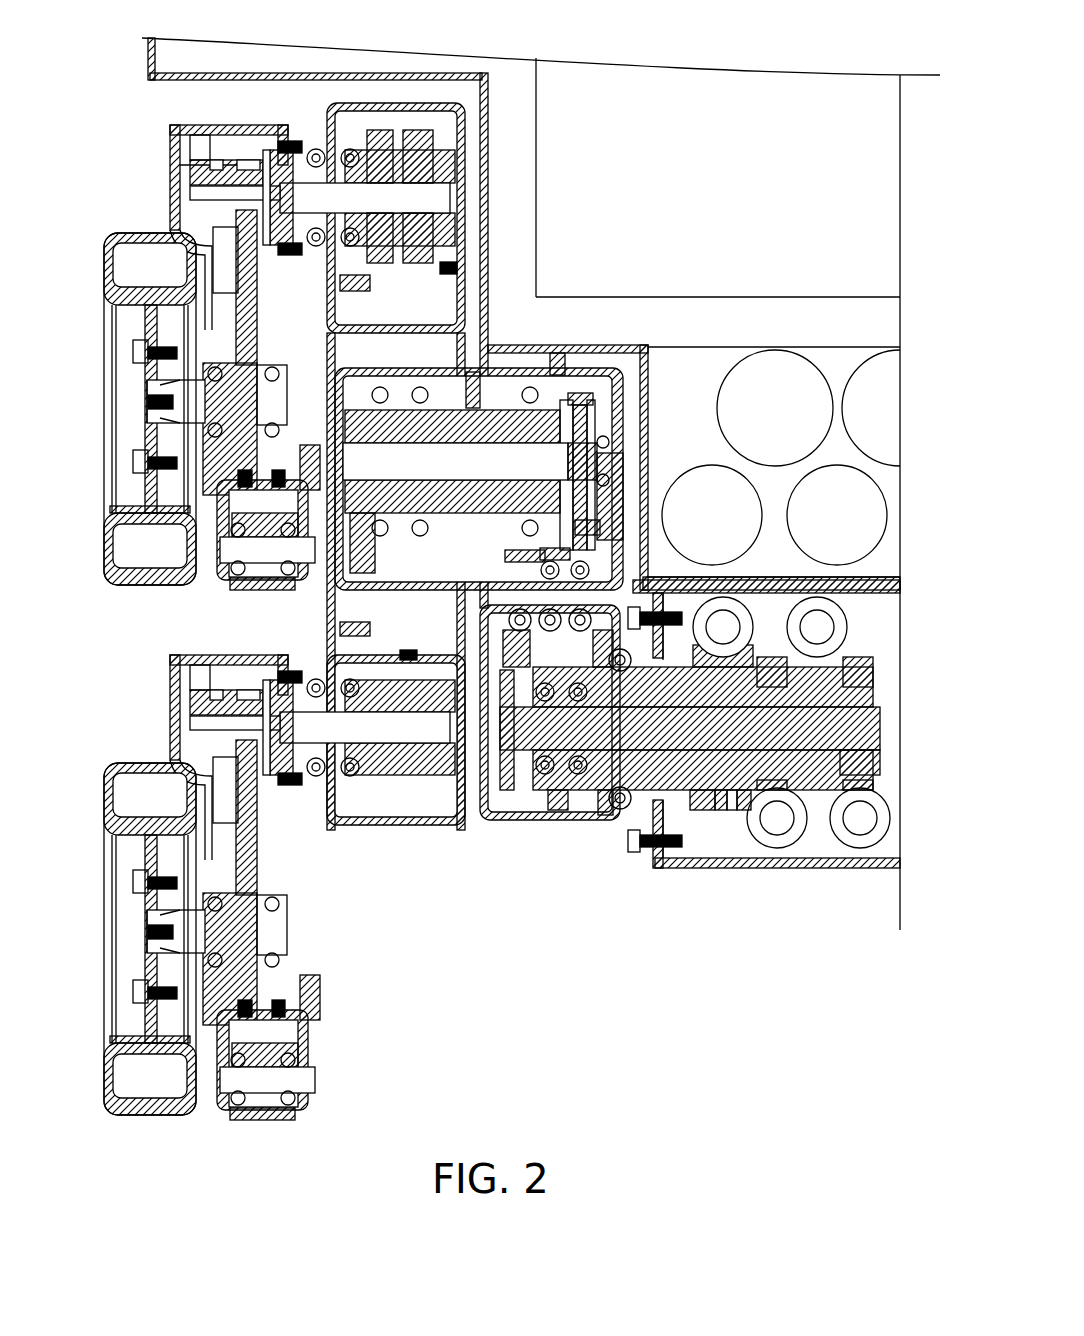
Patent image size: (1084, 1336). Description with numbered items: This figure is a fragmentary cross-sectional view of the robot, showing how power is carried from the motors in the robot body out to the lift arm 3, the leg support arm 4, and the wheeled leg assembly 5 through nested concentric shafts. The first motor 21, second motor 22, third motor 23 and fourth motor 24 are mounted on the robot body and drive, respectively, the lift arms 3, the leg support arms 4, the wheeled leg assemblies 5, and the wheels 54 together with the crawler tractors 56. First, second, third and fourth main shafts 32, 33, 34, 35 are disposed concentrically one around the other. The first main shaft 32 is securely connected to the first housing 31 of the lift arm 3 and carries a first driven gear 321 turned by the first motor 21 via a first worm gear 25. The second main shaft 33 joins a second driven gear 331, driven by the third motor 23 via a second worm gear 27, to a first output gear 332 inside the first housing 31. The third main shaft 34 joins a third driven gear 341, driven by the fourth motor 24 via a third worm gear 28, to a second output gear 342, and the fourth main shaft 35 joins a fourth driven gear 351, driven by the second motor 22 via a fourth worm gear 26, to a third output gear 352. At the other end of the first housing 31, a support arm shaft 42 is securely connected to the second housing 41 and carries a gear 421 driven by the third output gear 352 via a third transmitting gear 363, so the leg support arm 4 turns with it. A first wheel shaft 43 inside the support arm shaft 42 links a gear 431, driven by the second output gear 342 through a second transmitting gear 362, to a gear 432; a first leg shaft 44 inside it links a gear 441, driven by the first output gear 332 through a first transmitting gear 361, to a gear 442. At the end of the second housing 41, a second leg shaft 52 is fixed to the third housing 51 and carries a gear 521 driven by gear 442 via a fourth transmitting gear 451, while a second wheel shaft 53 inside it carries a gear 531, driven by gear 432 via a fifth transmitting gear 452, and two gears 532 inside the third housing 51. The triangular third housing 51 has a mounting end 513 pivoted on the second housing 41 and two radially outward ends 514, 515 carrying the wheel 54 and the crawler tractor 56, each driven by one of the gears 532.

The first motor 21 is at (890, 360).
The second motor 22 is at (775, 355).
The third motor 23 is at (707, 472).
The fourth motor 24 is at (885, 515).
The first worm gear 25 is at (730, 605).
The fourth worm gear 26 is at (860, 850).
The second worm gear 27 is at (777, 850).
The third worm gear 28 is at (845, 632).
The lift arm 3 is at (500, 828).
The first housing 31 is at (478, 828).
The first main shaft 32 is at (702, 812).
The first driven gear 321 is at (720, 812).
The second main shaft 33 is at (729, 812).
The second driven gear 331 is at (747, 812).
The first output gear 332 is at (582, 800).
The third main shaft 34 is at (615, 840).
The third driven gear 341 is at (817, 795).
The second output gear 342 is at (557, 812).
The fourth main shaft 35 is at (605, 815).
The fourth driven gear 351 is at (882, 770).
The third output gear 352 is at (525, 797).
The first transmitting gear 361 is at (605, 575).
The second transmitting gear 362 is at (580, 558).
The third transmitting gear 363 is at (595, 522).
The leg support arm 4 is at (367, 832).
The second housing 41 is at (489, 123).
The support arm shaft 42 is at (545, 382).
The gear 421 is at (558, 350).
The first wheel shaft 43 is at (498, 440).
The gear 431 is at (600, 395).
The gear 432 is at (480, 350).
The first leg shaft 44 is at (508, 405).
The gear 441 is at (608, 440).
The gear 442 is at (367, 522).
The fourth transmitting gear 451 is at (380, 282).
The fifth transmitting gear 452 is at (460, 268).
The wheeled leg assembly 5 is at (122, 178).
The third housing 51 is at (172, 157).
The mounting end 513 is at (272, 148).
The radially outward end 514 is at (290, 380).
The radially outward end 515 is at (312, 470).
The second leg shaft 52 is at (300, 132).
The gear 521 is at (380, 130).
The second wheel shaft 53 is at (334, 162).
The gear 531 is at (415, 130).
The gears 532 is at (205, 158).
The wheel 54 is at (128, 238).
The crawler tractor 56 is at (245, 588).